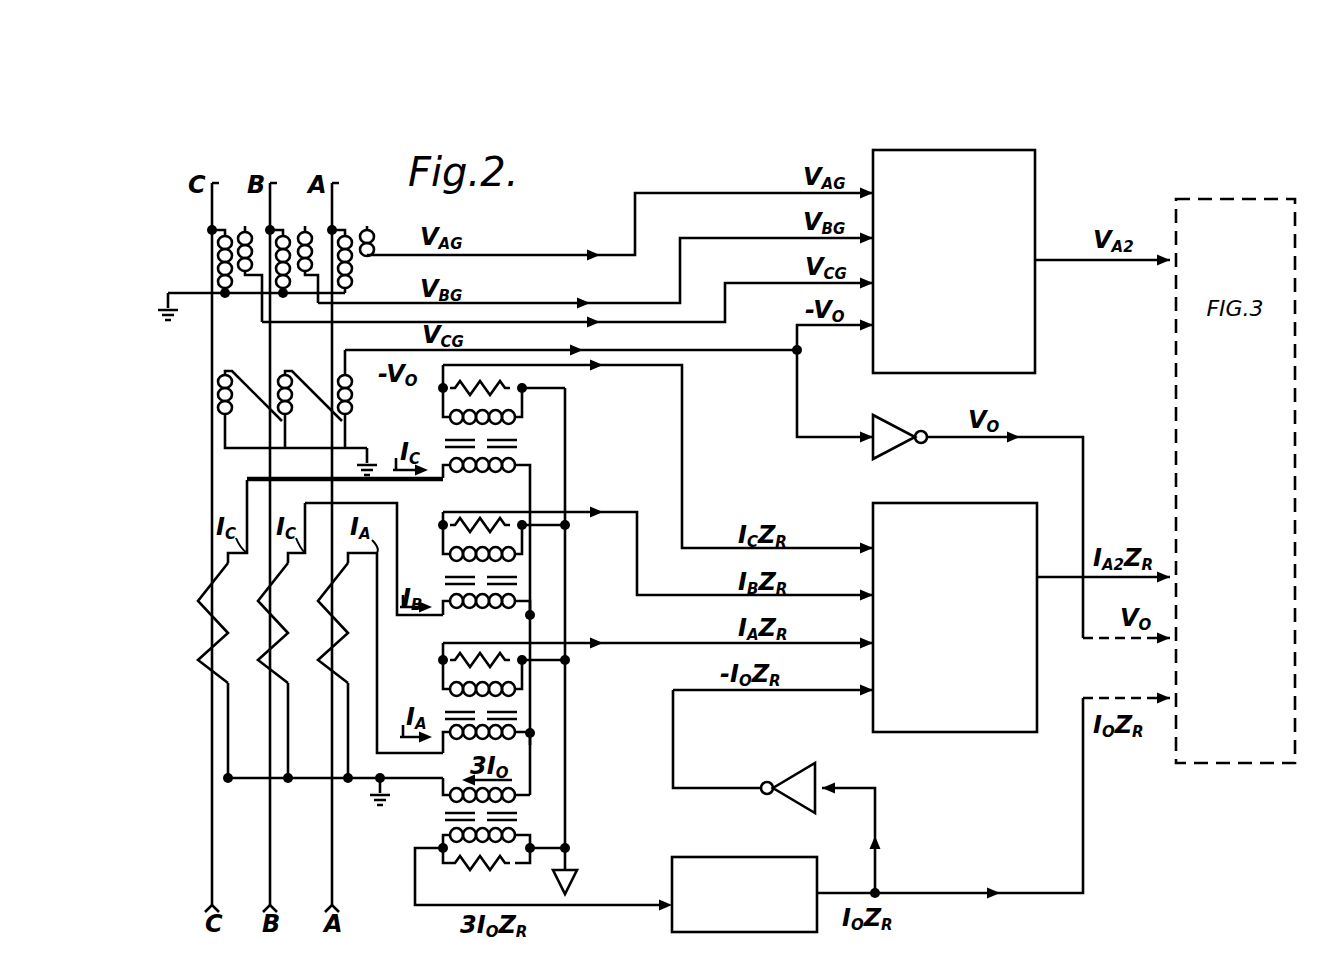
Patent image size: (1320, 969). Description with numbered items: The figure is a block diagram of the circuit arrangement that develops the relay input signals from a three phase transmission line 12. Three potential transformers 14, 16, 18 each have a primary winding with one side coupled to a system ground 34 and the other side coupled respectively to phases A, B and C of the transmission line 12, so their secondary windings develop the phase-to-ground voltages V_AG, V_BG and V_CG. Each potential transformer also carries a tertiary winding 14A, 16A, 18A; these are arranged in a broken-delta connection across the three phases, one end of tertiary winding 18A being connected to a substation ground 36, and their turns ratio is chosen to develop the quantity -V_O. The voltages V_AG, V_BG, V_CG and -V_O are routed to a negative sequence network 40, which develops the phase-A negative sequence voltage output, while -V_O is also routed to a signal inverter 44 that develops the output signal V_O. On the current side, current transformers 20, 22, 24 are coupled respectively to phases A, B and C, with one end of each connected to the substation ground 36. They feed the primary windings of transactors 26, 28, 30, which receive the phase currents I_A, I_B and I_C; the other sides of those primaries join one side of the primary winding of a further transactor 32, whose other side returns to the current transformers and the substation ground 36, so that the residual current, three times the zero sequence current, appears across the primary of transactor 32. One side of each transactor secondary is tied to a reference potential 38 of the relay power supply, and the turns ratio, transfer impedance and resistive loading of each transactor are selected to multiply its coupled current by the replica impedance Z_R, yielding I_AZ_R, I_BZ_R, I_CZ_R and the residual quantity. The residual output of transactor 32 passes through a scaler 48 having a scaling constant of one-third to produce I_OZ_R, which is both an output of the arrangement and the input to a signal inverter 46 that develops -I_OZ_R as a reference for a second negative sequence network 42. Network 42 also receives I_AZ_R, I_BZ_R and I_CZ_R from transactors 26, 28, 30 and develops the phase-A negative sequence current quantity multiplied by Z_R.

The three phase transmission line 12 is at (306, 176).
The potential transformer 14 is at (364, 226).
The potential transformer 16 is at (309, 226).
The potential transformer 18 is at (252, 226).
The tertiary winding 14A is at (366, 398).
The tertiary winding 16A is at (310, 409).
The tertiary winding 18A is at (250, 409).
The current transformer 20 is at (334, 674).
The current transformer 22 is at (274, 674).
The current transformer 24 is at (214, 674).
The transactor 26 is at (525, 712).
The transactor 28 is at (525, 584).
The transactor 30 is at (525, 450).
The transactor 32 is at (445, 818).
The system ground 34 is at (168, 296).
The substation ground 36 is at (360, 452).
The reference potential 38 is at (582, 882).
The negative sequence network 40 is at (958, 331).
The negative sequence network 42 is at (964, 687).
The inverter 44 is at (918, 450).
The signal inverter 46 is at (803, 768).
The scaler 48 is at (751, 857).